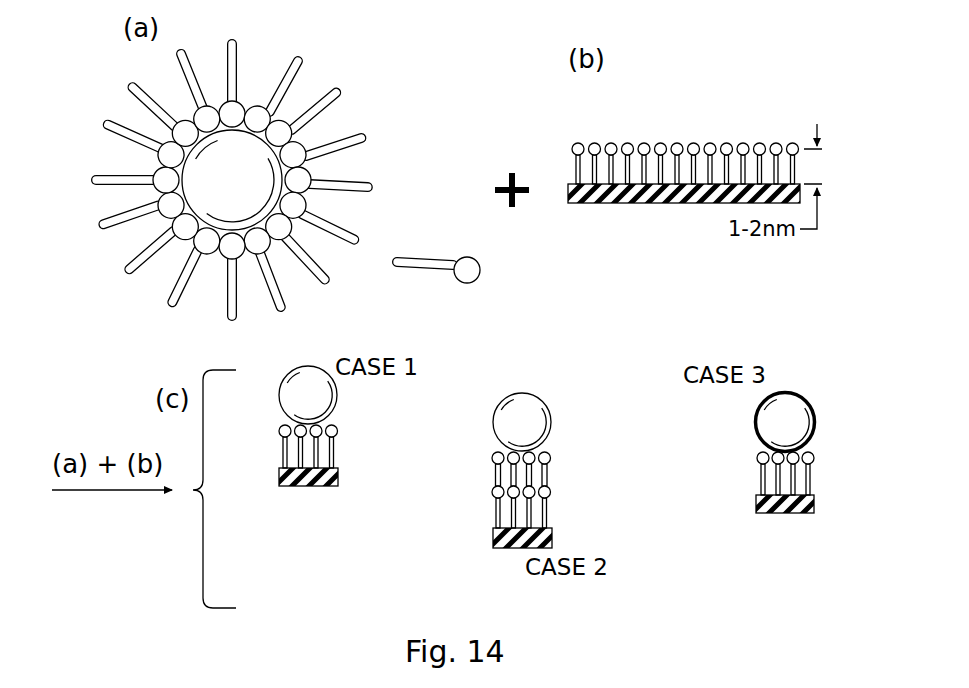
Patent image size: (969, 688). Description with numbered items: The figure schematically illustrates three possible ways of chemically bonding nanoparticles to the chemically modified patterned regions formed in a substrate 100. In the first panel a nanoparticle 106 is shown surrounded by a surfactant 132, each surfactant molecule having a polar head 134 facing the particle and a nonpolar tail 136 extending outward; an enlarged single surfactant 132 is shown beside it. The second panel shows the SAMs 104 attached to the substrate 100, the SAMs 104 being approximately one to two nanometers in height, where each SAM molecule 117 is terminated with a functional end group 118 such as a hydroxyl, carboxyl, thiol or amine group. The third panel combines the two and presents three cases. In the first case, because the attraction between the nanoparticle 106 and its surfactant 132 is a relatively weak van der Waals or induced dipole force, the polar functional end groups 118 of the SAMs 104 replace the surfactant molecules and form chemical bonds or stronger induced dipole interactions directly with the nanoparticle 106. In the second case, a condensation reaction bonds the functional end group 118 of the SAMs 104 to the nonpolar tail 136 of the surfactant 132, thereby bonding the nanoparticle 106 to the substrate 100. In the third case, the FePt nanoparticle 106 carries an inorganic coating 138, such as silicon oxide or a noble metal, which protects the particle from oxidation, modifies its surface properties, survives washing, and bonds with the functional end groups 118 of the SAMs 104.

The substrate 100 is at (322, 482).
The SAMs 104 is at (555, 313).
The nanoparticle 106 is at (277, 58).
The SAM molecule 117 is at (639, 132).
The functional end group 118 is at (571, 148).
The surfactant 132 is at (336, 265).
The polar head 134 is at (158, 184).
The nonpolar tail 136 is at (147, 96).
The coating 138 is at (796, 393).